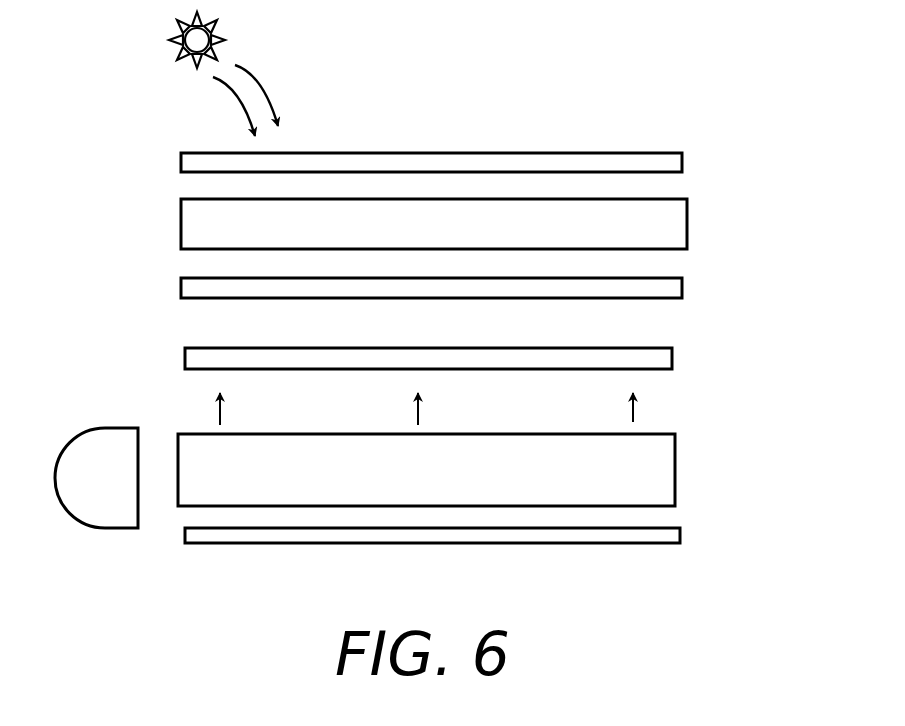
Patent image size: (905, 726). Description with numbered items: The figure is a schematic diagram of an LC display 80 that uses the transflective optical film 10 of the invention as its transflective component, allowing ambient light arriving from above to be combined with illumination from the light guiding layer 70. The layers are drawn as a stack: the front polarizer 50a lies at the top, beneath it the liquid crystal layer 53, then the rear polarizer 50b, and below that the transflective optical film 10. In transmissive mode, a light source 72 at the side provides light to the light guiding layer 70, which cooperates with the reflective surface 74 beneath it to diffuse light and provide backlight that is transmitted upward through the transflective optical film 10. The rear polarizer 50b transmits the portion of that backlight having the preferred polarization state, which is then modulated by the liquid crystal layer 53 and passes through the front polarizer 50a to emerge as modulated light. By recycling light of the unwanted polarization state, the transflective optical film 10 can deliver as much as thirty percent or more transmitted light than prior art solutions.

The LC display 80 is at (706, 123).
The front polarizer 50a is at (181, 162).
The liquid crystal layer 53 is at (687, 213).
The rear polarizer 50b is at (181, 290).
The transflective optical film 10 is at (672, 352).
The light guiding layer 70 is at (675, 455).
The reflective surface 74 is at (680, 533).
The light source 72 is at (82, 523).